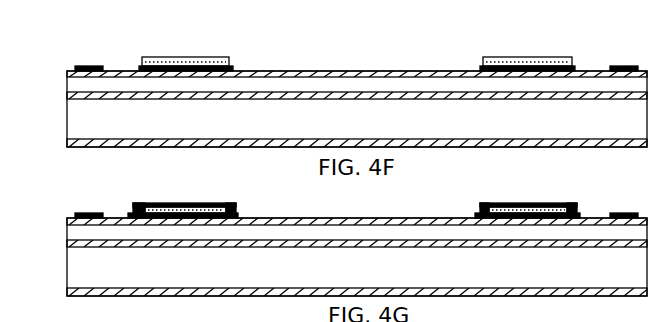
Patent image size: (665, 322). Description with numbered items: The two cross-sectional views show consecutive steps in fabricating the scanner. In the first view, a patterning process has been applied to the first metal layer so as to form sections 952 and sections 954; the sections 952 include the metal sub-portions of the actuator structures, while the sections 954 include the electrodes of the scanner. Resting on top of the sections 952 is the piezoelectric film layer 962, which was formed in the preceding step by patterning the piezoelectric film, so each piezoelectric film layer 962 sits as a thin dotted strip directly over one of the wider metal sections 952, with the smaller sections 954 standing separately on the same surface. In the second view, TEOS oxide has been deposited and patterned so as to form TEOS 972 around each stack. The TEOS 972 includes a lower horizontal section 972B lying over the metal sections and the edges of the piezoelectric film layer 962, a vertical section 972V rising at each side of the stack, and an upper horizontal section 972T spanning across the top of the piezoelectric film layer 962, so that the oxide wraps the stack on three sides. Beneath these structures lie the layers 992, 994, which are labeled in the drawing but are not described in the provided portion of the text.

In FIG. 4F, the sections of the first metal layer 952 is at (477, 65).
In FIG. 4F, the piezoelectric film layer 962 is at (517, 53).
In FIG. 4G, the piezoelectric film layer 962 is at (523, 203).
In FIG. 4F, the sections of the first metal layer 954 is at (631, 64).
In FIG. 4G, the TEOS 972 is at (472, 204).
In FIG. 4G, the vertical section 972V is at (134, 204).
In FIG. 4G, the upper horizontal section 972T is at (143, 201).
In FIG. 4G, the lower horizontal section 972B is at (130, 215).
In FIG. 4G, the substrate 992 is at (357, 305).
In FIG. 4G, the layer stack 994 is at (351, 270).